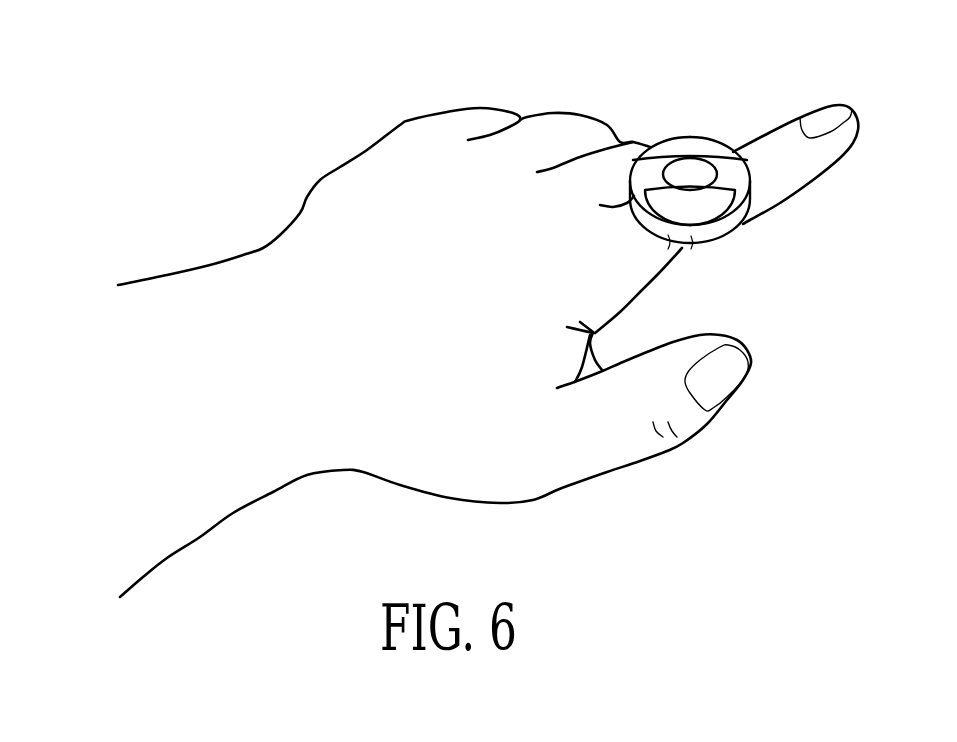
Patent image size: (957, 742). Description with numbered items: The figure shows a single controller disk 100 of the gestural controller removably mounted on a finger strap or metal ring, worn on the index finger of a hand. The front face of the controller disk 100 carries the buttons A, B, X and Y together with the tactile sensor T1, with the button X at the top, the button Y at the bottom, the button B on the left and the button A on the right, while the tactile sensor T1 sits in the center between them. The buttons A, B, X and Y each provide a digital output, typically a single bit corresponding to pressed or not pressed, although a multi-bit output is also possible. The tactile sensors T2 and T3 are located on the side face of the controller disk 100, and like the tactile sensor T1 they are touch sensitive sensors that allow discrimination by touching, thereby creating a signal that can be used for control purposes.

The controller disk 100 is at (708, 153).
The button A is at (720, 181).
The button B is at (660, 181).
The button X is at (690, 149).
The button Y is at (690, 207).
The tactile sensor T1 is at (690, 174).
The tactile sensor T2 is at (678, 241).
The tactile sensor T3 is at (701, 241).